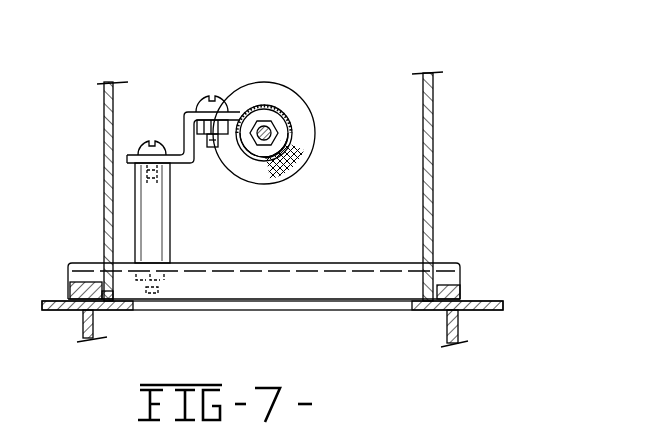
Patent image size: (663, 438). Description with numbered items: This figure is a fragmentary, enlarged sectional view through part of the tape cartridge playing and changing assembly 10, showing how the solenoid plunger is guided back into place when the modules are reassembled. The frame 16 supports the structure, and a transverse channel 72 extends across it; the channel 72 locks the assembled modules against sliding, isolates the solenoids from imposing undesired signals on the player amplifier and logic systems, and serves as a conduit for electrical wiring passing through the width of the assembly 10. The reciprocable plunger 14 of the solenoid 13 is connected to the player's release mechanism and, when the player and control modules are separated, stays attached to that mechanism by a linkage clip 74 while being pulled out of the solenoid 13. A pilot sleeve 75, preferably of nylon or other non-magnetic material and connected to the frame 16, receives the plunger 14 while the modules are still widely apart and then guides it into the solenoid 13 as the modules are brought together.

The tape cartridge playing and changing assembly 10 is at (440, 168).
The solenoid 13 is at (292, 144).
The reciprocable plunger 14 is at (284, 150).
The frame 16 is at (477, 298).
The transverse channel 72 is at (302, 263).
The linkage clip 74 is at (272, 122).
The pilot sleeve 75 is at (274, 116).